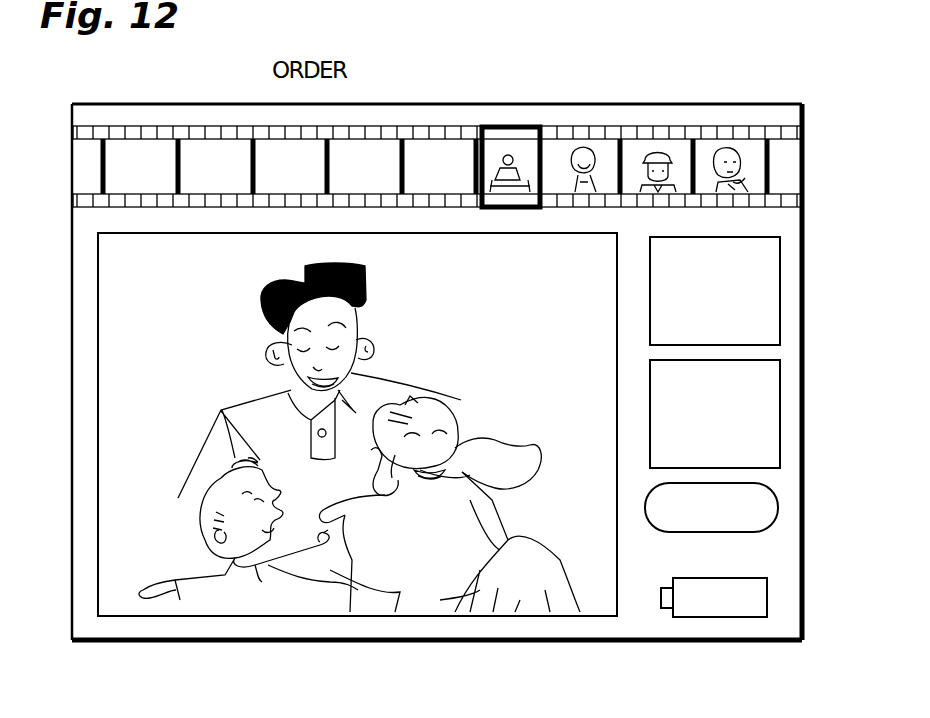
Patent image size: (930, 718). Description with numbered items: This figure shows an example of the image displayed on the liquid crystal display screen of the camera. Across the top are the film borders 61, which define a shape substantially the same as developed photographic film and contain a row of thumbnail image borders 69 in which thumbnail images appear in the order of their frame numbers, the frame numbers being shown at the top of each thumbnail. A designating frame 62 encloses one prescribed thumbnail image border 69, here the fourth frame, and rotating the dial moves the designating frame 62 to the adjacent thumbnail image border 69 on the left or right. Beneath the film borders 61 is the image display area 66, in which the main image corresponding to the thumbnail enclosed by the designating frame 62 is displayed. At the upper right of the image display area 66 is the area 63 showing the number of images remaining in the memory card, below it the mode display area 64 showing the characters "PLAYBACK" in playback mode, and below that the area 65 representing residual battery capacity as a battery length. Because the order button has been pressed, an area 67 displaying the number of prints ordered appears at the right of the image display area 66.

The film borders 61 is at (806, 131).
The designating frame 62 is at (517, 126).
The area displaying number of remaining images 63 is at (770, 286).
The mode display area 64 is at (779, 503).
The area representing residual battery capacity 65 is at (756, 594).
The image display area 66 is at (580, 590).
The area for displaying the number of prints ordered 67 is at (781, 397).
The thumbnail image borders 69 is at (450, 148).